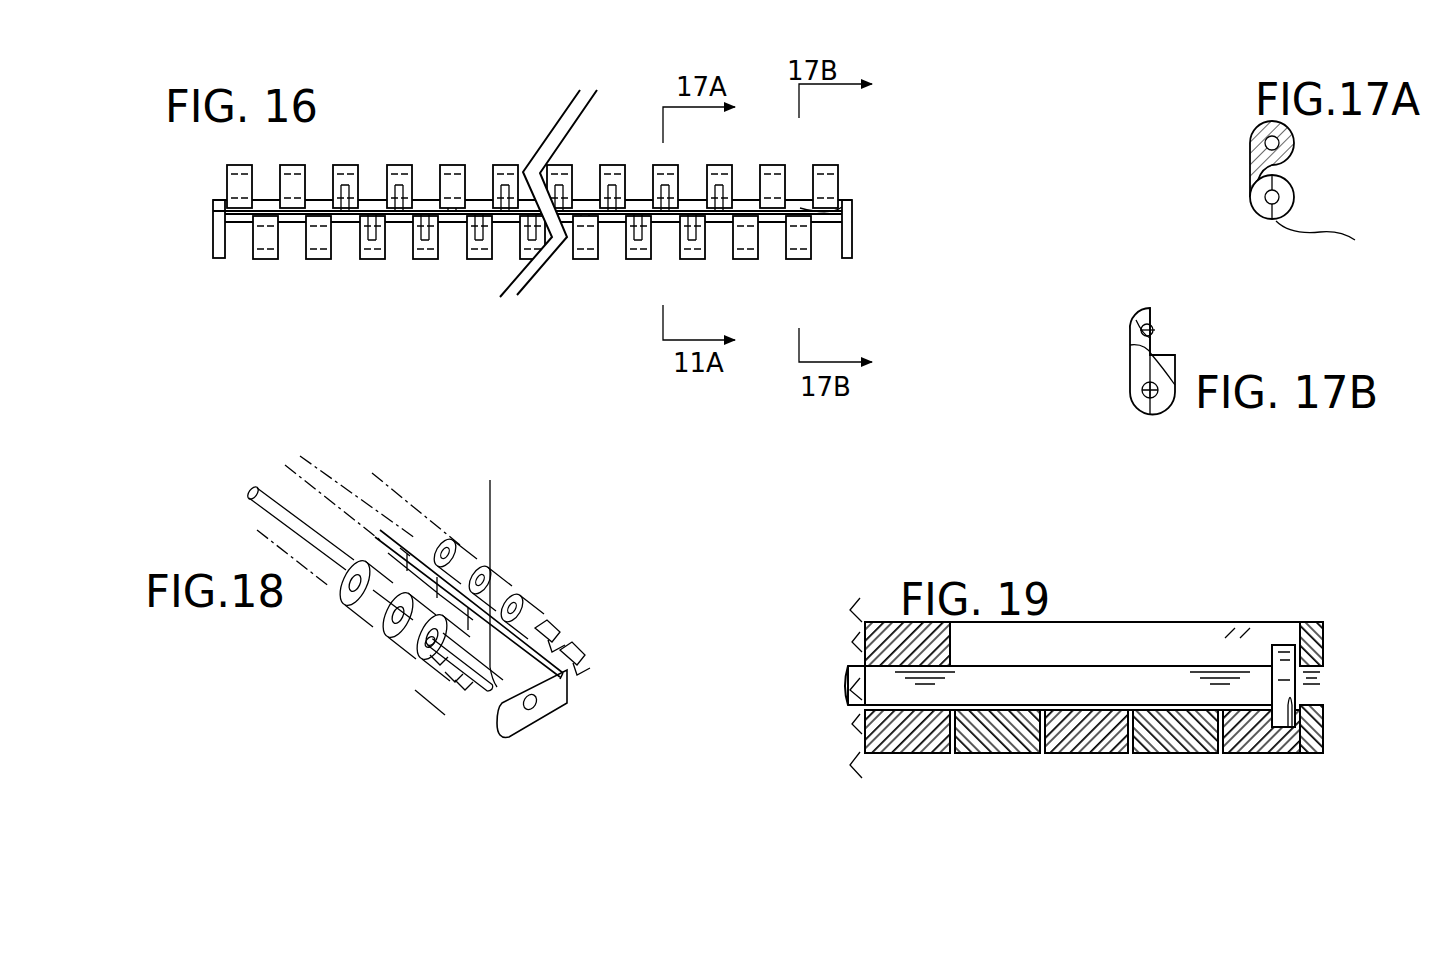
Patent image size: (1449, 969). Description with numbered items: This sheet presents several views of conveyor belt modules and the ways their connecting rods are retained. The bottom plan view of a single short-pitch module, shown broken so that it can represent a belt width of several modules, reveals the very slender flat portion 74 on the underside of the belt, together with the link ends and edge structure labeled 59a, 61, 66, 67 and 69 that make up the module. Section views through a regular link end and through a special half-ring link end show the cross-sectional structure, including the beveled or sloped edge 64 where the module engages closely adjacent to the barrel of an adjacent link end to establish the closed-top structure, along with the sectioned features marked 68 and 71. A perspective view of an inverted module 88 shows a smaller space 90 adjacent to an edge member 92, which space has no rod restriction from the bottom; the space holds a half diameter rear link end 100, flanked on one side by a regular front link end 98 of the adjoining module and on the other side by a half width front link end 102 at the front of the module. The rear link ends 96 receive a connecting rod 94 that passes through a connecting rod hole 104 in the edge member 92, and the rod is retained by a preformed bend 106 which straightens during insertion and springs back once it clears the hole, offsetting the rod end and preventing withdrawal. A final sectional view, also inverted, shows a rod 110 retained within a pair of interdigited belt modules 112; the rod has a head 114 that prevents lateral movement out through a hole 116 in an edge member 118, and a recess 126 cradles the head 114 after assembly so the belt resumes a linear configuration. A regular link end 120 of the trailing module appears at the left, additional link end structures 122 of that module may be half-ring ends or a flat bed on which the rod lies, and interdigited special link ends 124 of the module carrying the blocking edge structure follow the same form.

In FIG. 16, the tab 59a is at (455, 165).
In FIG. 16, the flat portion 74 is at (783, 177).
In FIG. 16, the flange 67 is at (575, 260).
In FIG. 17A, the flange 67 is at (1335, 238).
In FIG. 16, the tie bar 61 is at (830, 212).
In FIG. 16, the link assembly 66 is at (895, 223).
In FIG. 16, the end bracket 69 is at (850, 245).
In FIG. 17A, the beveled or sloped edge 64 is at (1255, 190).
In FIG. 17B, the beveled or sloped edge 64 is at (1133, 330).
In FIG. 17A, the pin hole 71 is at (1265, 137).
In FIG. 17B, the pin 68 is at (1155, 330).
In FIG. 18, the module 88 is at (608, 683).
In FIG. 18, the space 90 is at (418, 692).
In FIG. 18, the edge member 92 is at (540, 712).
In FIG. 18, the connecting rod 94 is at (250, 500).
In FIG. 18, the rear link ends 96 is at (375, 612).
In FIG. 18, the front link ends 98 is at (512, 598).
In FIG. 18, the half diameter rear link end 100 is at (455, 690).
In FIG. 18, the half width front link end 102 is at (555, 628).
In FIG. 18, the connecting rod hole 104 is at (540, 702).
In FIG. 18, the preformed bend 106 is at (513, 567).
In FIG. 19, the rod 110 is at (1058, 680).
In FIG. 19, the belt modules 112 is at (1330, 628).
In FIG. 19, the head 114 is at (1280, 655).
In FIG. 19, the hole 116 is at (1305, 672).
In FIG. 19, the edge member 118 is at (1322, 735).
In FIG. 19, the regular link end 120 is at (900, 757).
In FIG. 19, the link end structures 122 is at (1070, 757).
In FIG. 19, the special link ends 124 is at (990, 757).
In FIG. 19, the recess 126 is at (1292, 730).